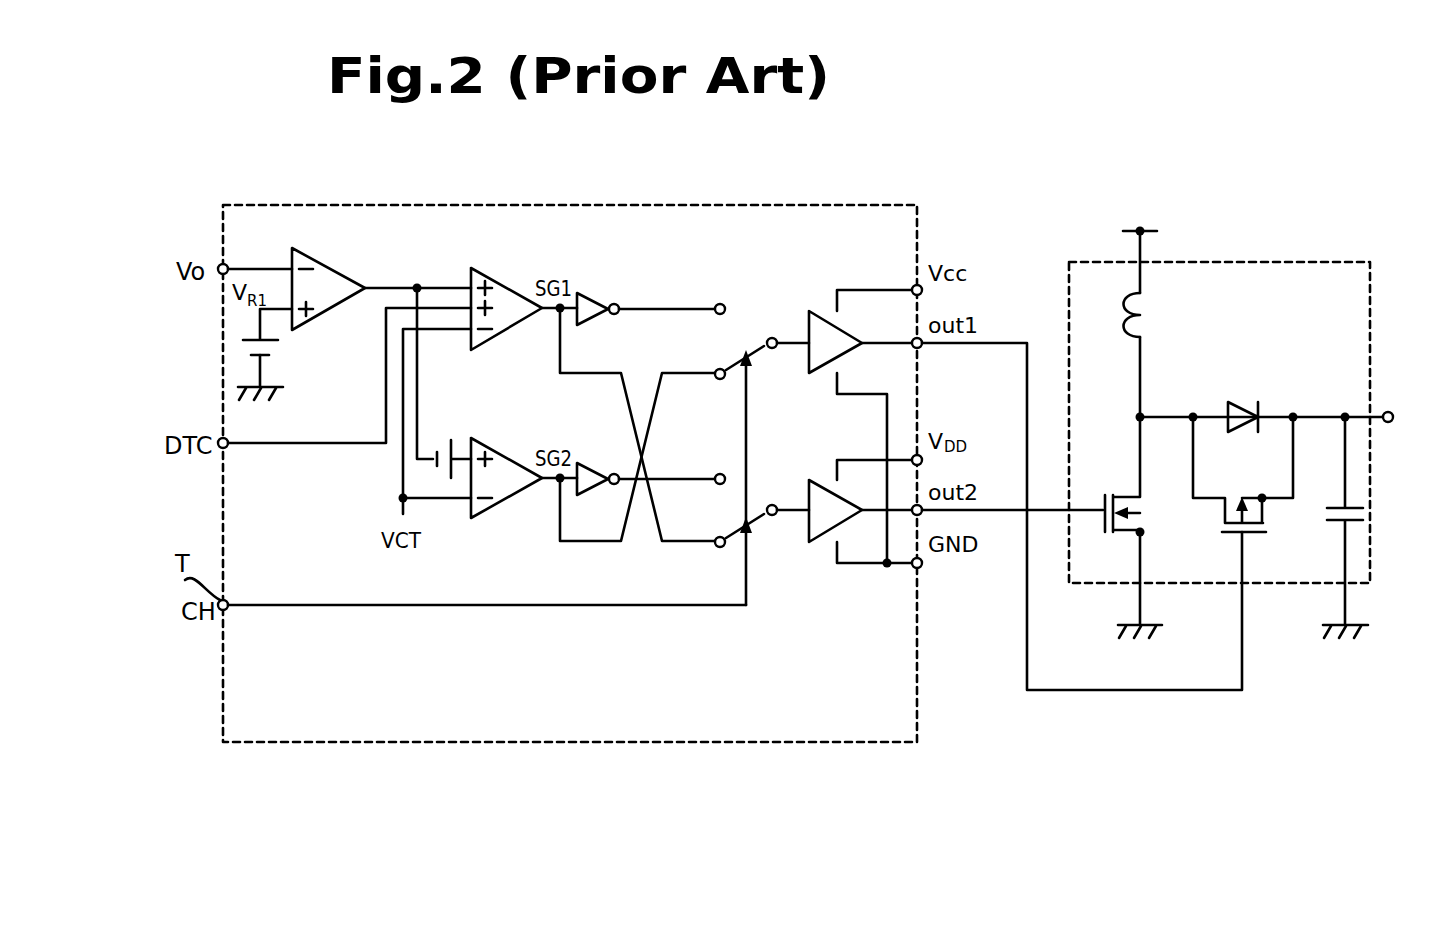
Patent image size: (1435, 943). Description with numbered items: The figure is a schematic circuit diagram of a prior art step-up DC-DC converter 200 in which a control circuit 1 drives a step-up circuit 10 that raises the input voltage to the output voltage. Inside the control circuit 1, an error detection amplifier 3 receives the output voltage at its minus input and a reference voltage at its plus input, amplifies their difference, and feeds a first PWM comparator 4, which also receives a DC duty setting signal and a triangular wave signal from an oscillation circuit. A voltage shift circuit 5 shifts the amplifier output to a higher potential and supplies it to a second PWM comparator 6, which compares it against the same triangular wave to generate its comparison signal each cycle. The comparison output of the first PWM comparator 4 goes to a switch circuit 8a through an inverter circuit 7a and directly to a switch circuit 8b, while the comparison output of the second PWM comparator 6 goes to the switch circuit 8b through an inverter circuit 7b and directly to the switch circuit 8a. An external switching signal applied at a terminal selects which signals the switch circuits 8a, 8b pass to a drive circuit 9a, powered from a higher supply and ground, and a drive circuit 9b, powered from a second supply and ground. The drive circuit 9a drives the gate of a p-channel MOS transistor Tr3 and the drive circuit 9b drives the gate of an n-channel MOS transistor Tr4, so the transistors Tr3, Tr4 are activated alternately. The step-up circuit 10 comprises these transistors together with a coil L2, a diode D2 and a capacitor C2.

The control circuit 1 is at (872, 207).
The error detection amplifier 3 is at (330, 262).
The first PWM comparator 4 is at (508, 278).
The voltage shift circuit 5 is at (455, 438).
The second PWM comparator 6 is at (509, 440).
The inverter circuit 7a is at (592, 293).
The inverter circuit 7b is at (590, 462).
The switch circuit 8a is at (730, 356).
The switch circuit 8b is at (730, 524).
The drive circuit 9a is at (826, 310).
The drive circuit 9b is at (826, 479).
The step-up circuit 10 is at (1280, 262).
The step-up DC-DC converter 200 is at (1204, 162).
The coil L2 is at (1150, 297).
The diode D2 is at (1250, 402).
The n-channel MOS transistor Tr4 is at (1132, 493).
The p-channel MOS transistor Tr3 is at (1268, 515).
The capacitor C2 is at (1360, 503).